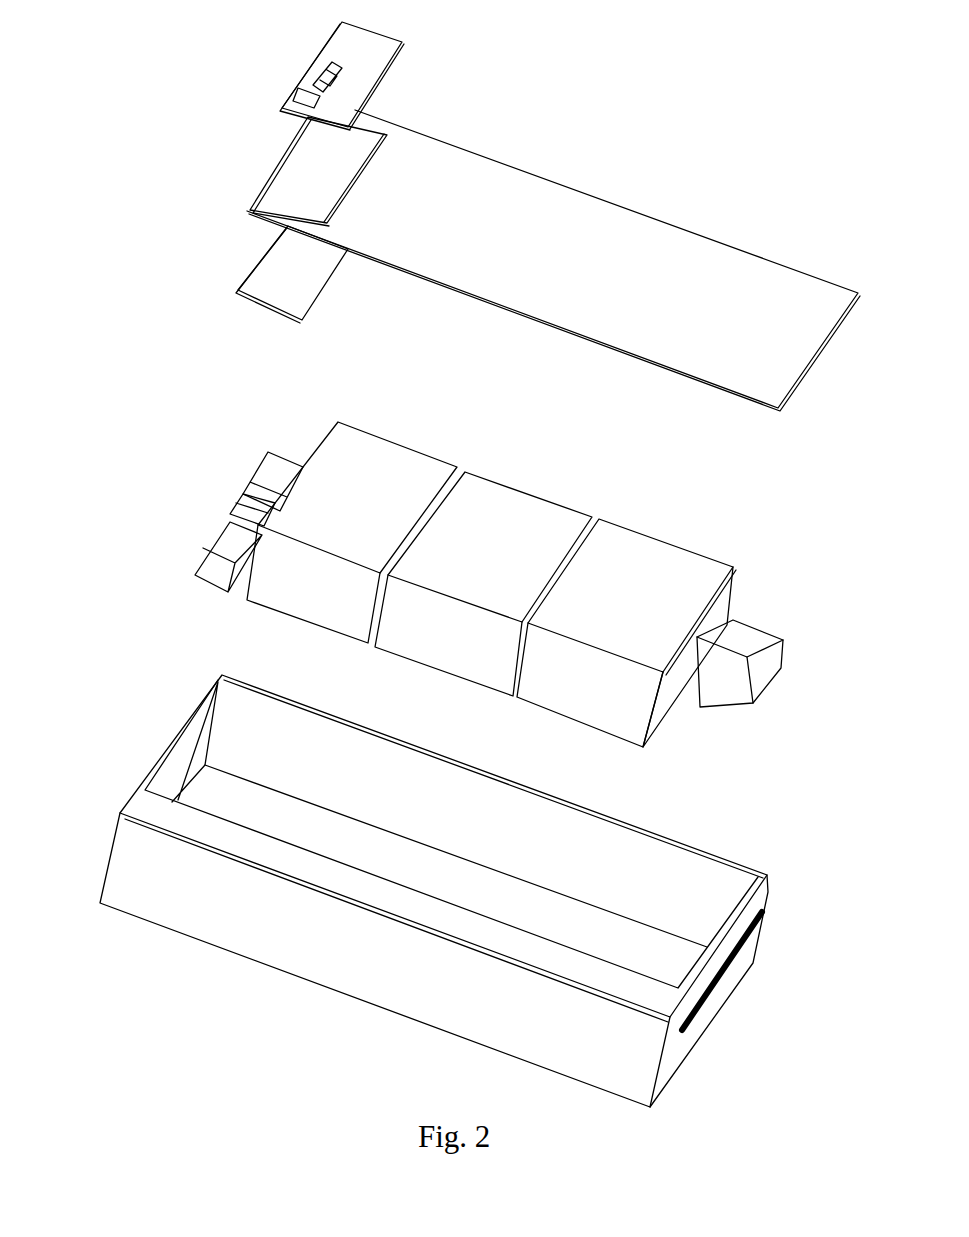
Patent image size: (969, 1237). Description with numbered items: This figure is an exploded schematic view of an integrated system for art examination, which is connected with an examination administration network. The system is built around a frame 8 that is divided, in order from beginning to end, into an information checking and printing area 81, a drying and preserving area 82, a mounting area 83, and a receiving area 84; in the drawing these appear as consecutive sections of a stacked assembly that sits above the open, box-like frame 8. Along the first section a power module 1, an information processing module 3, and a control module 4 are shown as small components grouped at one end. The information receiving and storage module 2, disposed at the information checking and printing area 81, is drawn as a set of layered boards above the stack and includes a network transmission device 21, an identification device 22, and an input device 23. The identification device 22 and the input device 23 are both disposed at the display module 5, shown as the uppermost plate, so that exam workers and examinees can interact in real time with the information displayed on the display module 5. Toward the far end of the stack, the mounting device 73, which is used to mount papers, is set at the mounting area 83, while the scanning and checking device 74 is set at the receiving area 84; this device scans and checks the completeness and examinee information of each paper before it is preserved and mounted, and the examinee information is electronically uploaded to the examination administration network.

The power module 1 is at (222, 548).
The information receiving and storage module 2 is at (163, 243).
The information processing module 3 is at (238, 510).
The control module 4 is at (282, 468).
The display module 5 is at (348, 43).
The frame 8 is at (135, 868).
The network transmission device 21 is at (287, 276).
The identification device 22 is at (294, 97).
The input device 23 is at (314, 72).
The mounting device 73 is at (595, 690).
The scanning and checking device 74 is at (685, 693).
The information checking and printing area 81 is at (470, 453).
The drying and preserving area 82 is at (612, 502).
The mounting area 83 is at (752, 552).
The receiving area 84 is at (827, 582).